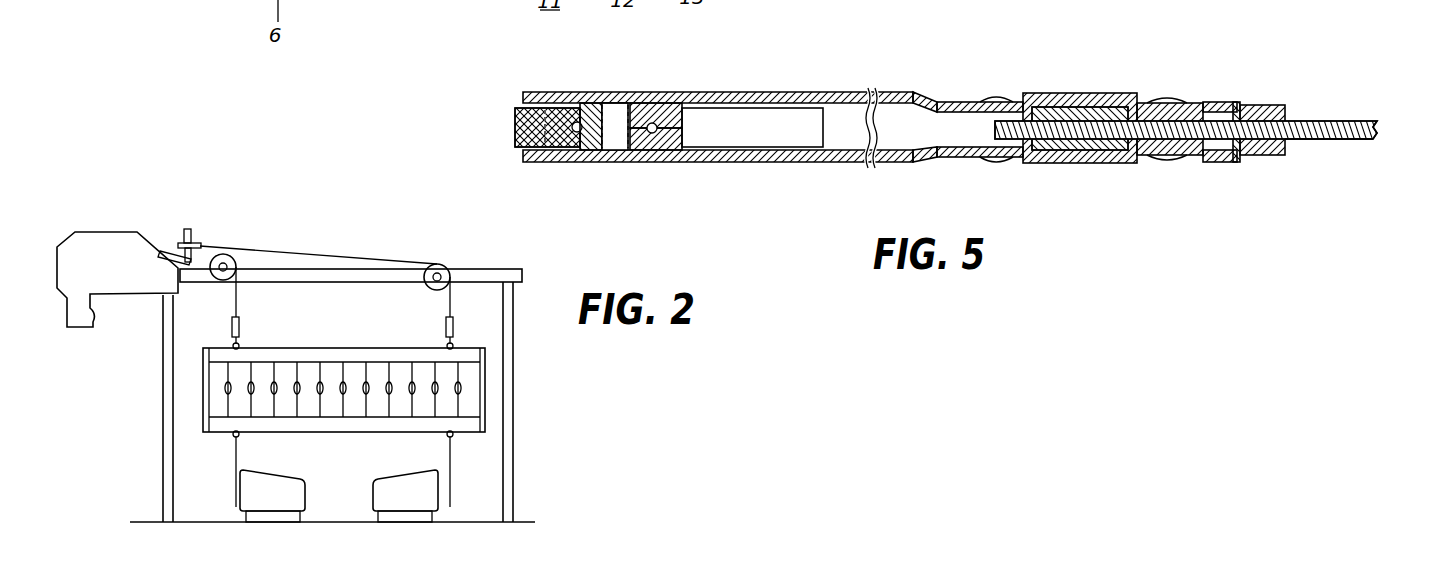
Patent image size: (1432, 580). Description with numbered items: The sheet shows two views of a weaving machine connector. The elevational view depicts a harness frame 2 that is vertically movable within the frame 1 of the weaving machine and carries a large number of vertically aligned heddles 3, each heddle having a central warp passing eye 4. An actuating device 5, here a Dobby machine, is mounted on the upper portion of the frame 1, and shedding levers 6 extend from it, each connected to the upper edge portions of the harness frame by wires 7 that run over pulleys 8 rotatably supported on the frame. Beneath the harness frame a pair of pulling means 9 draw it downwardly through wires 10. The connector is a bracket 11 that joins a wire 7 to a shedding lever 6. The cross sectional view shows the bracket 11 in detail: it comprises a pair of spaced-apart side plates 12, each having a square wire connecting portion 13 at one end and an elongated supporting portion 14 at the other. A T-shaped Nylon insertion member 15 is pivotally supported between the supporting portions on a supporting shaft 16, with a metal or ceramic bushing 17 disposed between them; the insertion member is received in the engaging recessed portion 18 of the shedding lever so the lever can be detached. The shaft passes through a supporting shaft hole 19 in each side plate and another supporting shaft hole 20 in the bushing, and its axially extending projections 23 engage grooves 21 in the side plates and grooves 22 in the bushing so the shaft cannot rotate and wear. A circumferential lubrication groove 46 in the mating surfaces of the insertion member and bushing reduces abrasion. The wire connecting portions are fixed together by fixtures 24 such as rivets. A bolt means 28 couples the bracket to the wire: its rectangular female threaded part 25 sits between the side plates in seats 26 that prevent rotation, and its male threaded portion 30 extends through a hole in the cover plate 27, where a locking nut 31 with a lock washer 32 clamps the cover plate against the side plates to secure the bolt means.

In FIG. 2, the frame 1 is at (513, 368).
In FIG. 2, the harness frame 2 is at (352, 355).
In FIG. 2, the heddles 3 is at (297, 405).
In FIG. 2, the warp passing eye 4 is at (323, 388).
In FIG. 2, the actuating device 5 is at (139, 248).
In FIG. 2, the shedding lever 6 is at (188, 232).
In FIG. 2, the wires 7 is at (236, 288).
In FIG. 2, the pulleys 8 is at (221, 280).
In FIG. 2, the pulling means 9 is at (380, 497).
In FIG. 2, the wires 10 is at (234, 457).
In FIG. 2, the bracket 11 is at (197, 277).
In FIG. 5, the bracket 11 is at (937, 95).
In FIG. 5, the side plates 12 is at (905, 92).
In FIG. 5, the wire connecting portion 13 is at (1170, 110).
In FIG. 5, the supporting portion 14 is at (763, 98).
In FIG. 5, the insertion member 15 is at (516, 144).
In FIG. 5, the supporting shaft 16 is at (612, 100).
In FIG. 5, the bushing 17 is at (648, 152).
In FIG. 5, the engaging recessed portion 18 is at (676, 137).
In FIG. 5, the supporting shaft hole 19 is at (628, 105).
In FIG. 5, the supporting shaft hole 20 is at (622, 140).
In FIG. 5, the grooves 21 is at (601, 96).
In FIG. 5, the grooves 22 is at (602, 140).
In FIG. 5, the projections 23 is at (643, 117).
In FIG. 5, the fixtures 24 is at (1003, 163).
In FIG. 5, the female threaded part 25 is at (1096, 113).
In FIG. 5, the seat 26 is at (1056, 112).
In FIG. 5, the cover plate 27 is at (1236, 102).
In FIG. 5, the bolt means 28 is at (1338, 118).
In FIG. 5, the male threaded portion 30 is at (1318, 142).
In FIG. 5, the locking nut 31 is at (1268, 156).
In FIG. 5, the lock washer 32 is at (1237, 162).
In FIG. 5, the lubrication groove 46 is at (567, 130).